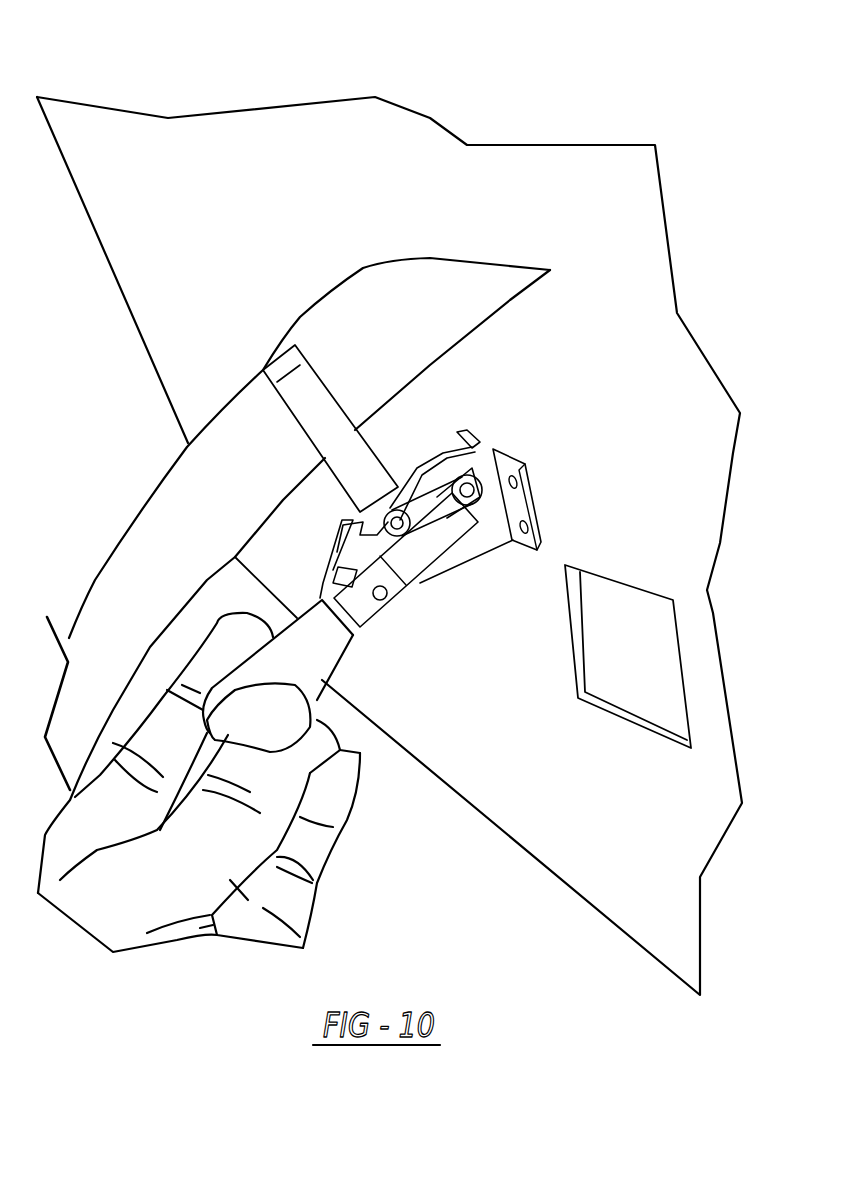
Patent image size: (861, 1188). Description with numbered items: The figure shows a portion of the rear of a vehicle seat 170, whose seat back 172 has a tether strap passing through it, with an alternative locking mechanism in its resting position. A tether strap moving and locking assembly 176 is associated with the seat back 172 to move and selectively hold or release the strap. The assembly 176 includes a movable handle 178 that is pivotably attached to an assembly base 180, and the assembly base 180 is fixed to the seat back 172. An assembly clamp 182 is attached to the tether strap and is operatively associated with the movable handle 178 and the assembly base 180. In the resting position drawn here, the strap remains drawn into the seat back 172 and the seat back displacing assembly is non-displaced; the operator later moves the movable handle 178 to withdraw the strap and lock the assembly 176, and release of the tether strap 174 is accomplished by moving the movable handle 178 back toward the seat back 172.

The seat 170 is at (238, 72).
The seat back 172 is at (177, 285).
The tether strap 174 is at (183, 518).
The tether strap moving and locking assembly 176 is at (457, 553).
The movable handle 178 is at (332, 640).
The assembly base 180 is at (480, 550).
The assembly clamp 182 is at (322, 407).